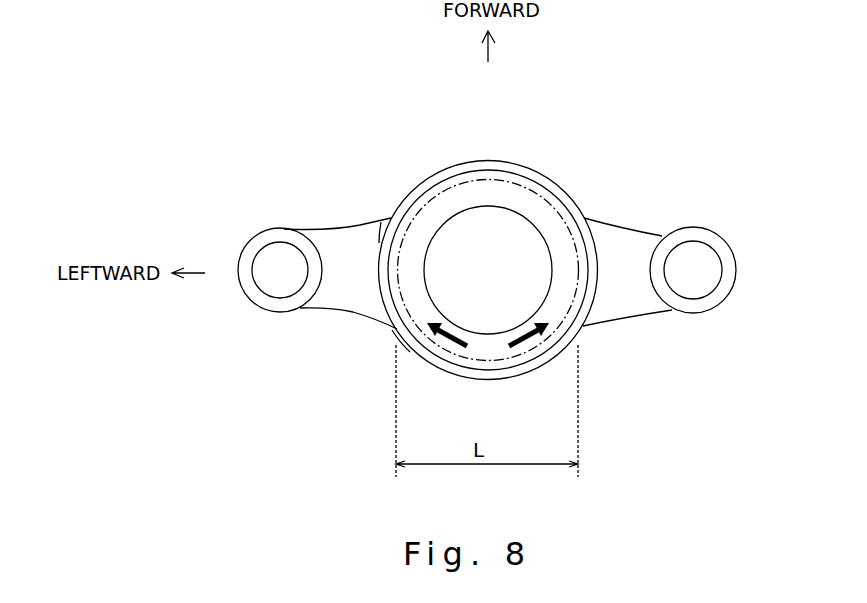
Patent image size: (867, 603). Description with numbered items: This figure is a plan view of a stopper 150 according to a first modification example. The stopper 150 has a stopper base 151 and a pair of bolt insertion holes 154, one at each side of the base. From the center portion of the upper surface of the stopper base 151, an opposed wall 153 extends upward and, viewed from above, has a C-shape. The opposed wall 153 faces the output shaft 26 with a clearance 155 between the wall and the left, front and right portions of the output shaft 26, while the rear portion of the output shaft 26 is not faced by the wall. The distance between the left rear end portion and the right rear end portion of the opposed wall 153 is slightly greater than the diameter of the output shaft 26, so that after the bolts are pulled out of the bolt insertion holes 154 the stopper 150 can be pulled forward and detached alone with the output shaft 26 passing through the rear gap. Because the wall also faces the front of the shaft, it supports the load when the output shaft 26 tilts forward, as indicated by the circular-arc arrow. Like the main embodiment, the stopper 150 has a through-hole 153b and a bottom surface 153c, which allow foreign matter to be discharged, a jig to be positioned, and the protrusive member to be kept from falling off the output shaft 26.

The output shaft 26 is at (447, 163).
The stopper 150 is at (488, 280).
The stopper base 151 is at (342, 253).
The opposed wall 153 is at (385, 286).
The through-hole 153b is at (510, 227).
The bottom surface 153c is at (401, 340).
The bolt insertion hole 154 is at (278, 240).
The clearance 155 is at (388, 232).